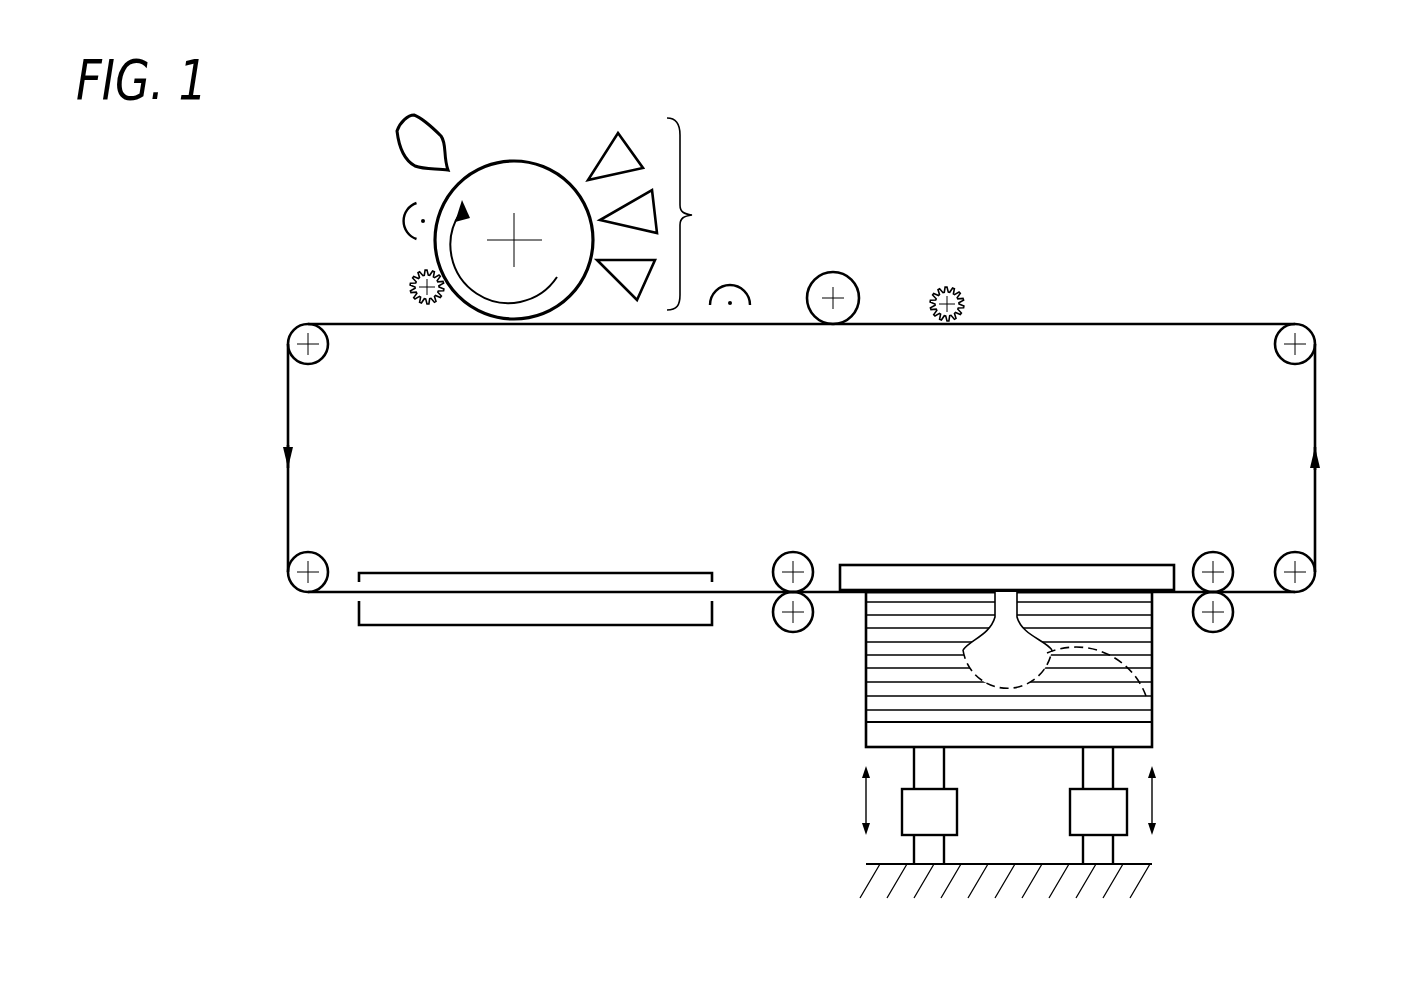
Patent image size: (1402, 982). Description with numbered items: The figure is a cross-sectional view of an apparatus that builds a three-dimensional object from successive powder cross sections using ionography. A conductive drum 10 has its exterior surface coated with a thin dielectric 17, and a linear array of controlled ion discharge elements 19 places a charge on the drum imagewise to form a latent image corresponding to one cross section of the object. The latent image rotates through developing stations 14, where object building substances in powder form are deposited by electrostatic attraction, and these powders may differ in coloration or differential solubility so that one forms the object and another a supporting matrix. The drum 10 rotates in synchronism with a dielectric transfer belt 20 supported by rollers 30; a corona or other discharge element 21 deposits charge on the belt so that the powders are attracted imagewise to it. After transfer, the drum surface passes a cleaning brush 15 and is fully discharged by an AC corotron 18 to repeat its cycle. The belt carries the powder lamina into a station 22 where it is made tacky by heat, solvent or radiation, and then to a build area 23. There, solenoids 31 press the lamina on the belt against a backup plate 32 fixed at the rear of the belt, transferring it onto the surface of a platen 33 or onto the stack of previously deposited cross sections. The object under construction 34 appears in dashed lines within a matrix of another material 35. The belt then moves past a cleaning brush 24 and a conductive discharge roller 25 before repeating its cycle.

The conductive drum 10 is at (507, 186).
The developing stations 14 is at (657, 214).
The cleaning brush 15 is at (412, 281).
The thin dielectric 17 is at (540, 150).
The AC corotron 18 is at (405, 218).
The linear array of controlled ion discharge elements 19 is at (412, 116).
The dielectric transfer belt 20 is at (1165, 310).
The corona discharge element 21 is at (735, 285).
The station 22 is at (535, 572).
The build area 23 is at (932, 503).
The cleaning brush 24 is at (955, 288).
The conductive discharge roller 25 is at (838, 273).
The rollers 30 is at (328, 350).
The solenoids 31 is at (947, 828).
The backup plate 32 is at (1100, 550).
The platen 33 is at (1003, 745).
The object under construction 34 is at (1146, 696).
The matrix of another material 35 is at (883, 628).